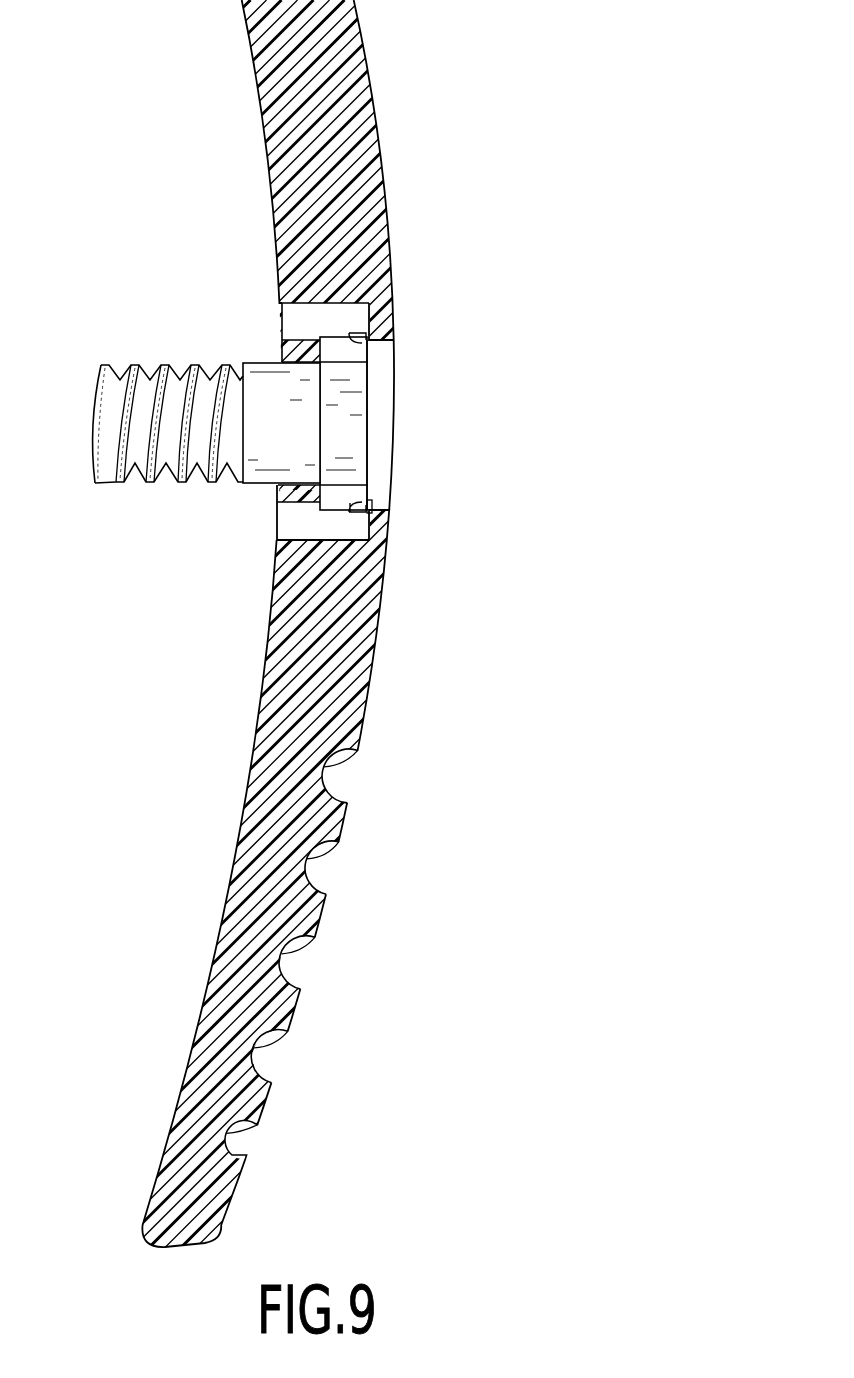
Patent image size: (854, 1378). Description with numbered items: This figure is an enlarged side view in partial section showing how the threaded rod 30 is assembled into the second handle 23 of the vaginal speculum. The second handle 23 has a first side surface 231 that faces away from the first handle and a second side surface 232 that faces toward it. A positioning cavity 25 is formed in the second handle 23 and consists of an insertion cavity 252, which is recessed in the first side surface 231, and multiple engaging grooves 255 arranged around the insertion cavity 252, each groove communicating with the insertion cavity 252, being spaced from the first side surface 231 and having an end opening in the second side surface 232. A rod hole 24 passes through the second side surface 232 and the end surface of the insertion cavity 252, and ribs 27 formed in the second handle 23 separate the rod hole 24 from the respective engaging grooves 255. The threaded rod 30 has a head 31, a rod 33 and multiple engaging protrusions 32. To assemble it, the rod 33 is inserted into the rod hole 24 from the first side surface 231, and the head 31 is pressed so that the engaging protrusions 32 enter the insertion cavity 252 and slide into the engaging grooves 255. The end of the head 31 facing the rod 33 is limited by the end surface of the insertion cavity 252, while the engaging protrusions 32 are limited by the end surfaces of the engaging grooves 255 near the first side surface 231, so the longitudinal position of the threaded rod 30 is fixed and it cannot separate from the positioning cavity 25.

The second handle 23 is at (427, 650).
The first side surface 231 is at (376, 104).
The second side surface 232 is at (256, 65).
The engaging grooves 255 is at (347, 314).
The ribs 27 is at (281, 352).
The positioning cavity 25 is at (411, 447).
The insertion cavity 252 is at (392, 424).
The head 31 is at (385, 494).
The engaging protrusions 32 is at (378, 344).
The threaded rod 30 is at (180, 418).
The rod hole 24 is at (305, 483).
The rod 33 is at (122, 477).